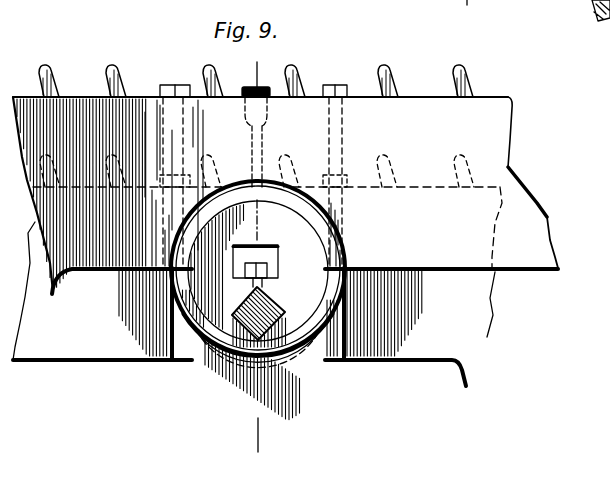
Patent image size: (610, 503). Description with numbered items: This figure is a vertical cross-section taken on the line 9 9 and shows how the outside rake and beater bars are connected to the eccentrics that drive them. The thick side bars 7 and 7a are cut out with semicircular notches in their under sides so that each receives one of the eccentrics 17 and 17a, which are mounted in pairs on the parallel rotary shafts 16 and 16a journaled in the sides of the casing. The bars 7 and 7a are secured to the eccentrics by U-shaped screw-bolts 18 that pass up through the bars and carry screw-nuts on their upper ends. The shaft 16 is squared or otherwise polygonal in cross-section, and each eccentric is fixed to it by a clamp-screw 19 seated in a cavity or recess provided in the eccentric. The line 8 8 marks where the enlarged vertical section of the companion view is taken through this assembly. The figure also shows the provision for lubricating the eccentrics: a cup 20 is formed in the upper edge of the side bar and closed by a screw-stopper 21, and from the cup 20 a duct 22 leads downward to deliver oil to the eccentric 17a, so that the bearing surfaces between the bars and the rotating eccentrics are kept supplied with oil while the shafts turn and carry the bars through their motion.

The side bar 7 is at (257, 270).
The side bar 7a is at (285, 179).
The section line 8 8 is at (257, 255).
The section line 9 9 is at (460, 17).
The rotary shaft 16 is at (282, 303).
The eccentric 17 is at (258, 371).
The eccentric 17a is at (258, 268).
The U-shaped screw-bolt 18 is at (343, 221).
The clamp-screw 19 is at (267, 270).
The oil cup 20 is at (270, 114).
The screw-stopper 21 is at (256, 80).
The oil duct 22 is at (258, 146).